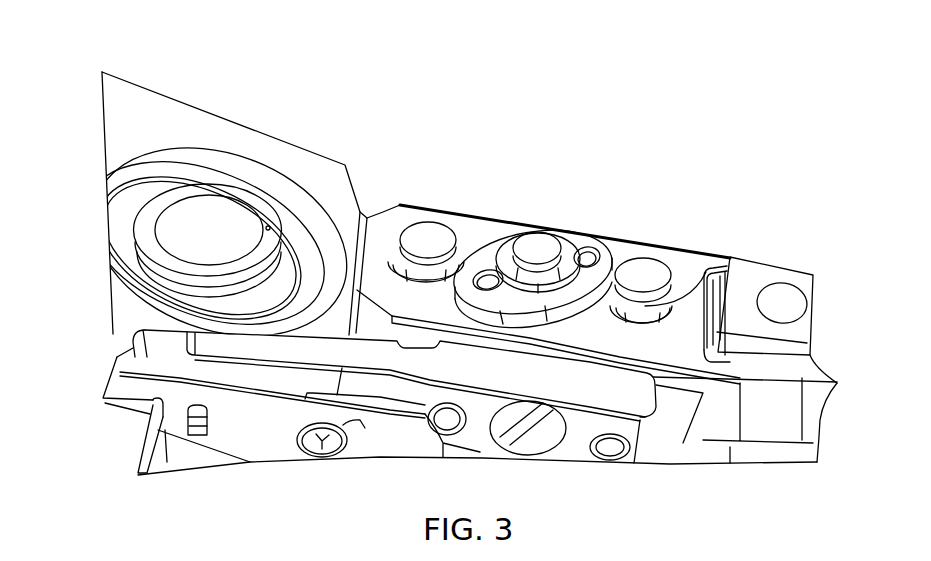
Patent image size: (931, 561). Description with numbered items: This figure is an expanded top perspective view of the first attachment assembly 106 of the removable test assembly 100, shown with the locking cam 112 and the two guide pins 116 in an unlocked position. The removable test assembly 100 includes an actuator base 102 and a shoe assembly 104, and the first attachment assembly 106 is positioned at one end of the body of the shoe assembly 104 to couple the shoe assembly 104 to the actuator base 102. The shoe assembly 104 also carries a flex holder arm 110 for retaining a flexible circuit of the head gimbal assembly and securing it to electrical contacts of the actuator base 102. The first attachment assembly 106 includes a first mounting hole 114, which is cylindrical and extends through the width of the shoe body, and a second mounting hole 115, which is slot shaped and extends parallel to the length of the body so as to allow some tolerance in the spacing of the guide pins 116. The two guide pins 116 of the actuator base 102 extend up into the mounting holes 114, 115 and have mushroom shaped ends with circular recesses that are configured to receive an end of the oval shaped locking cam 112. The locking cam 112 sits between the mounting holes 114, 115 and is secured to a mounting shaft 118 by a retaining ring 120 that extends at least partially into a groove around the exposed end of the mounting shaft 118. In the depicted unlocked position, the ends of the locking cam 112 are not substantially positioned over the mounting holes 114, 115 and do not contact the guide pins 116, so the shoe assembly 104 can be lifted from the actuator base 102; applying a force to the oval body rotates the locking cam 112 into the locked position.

The removable test assembly 100 is at (704, 98).
The actuator base 102 is at (158, 94).
The shoe assembly 104 is at (730, 259).
The first attachment assembly 106 is at (737, 193).
The flex holder arm 110 is at (137, 341).
The locking cam 112 is at (500, 237).
The first mounting hole 114 is at (672, 307).
The second mounting hole 115 is at (394, 247).
The guide pins 116 is at (428, 232).
The mounting shaft 118 is at (543, 247).
The retaining ring 120 is at (570, 260).